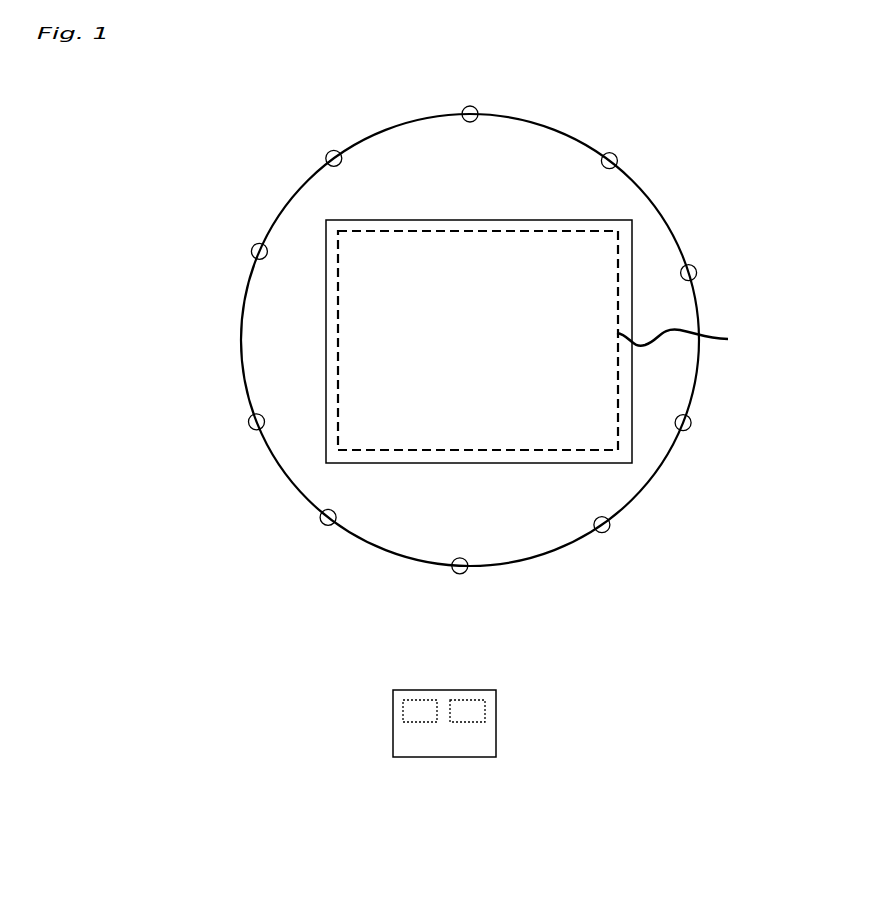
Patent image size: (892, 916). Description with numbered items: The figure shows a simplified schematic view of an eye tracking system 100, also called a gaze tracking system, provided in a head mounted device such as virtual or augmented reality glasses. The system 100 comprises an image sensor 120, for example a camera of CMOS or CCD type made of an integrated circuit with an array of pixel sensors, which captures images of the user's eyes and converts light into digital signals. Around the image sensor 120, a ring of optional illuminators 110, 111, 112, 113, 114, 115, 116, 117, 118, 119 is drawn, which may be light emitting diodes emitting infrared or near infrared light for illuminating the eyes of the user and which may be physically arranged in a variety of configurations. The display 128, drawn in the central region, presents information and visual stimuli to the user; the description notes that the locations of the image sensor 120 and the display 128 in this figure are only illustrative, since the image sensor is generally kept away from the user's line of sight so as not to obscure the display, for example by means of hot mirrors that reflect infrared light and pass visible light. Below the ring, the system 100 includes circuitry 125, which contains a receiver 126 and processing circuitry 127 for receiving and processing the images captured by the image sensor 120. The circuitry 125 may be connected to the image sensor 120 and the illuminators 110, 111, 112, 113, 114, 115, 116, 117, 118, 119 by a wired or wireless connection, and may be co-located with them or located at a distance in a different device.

The eye tracking system 100 is at (205, 572).
The illuminator 110 is at (258, 243).
The illuminator 111 is at (335, 150).
The illuminator 112 is at (470, 106).
The illuminator 113 is at (615, 153).
The illuminator 114 is at (692, 265).
The illuminator 115 is at (689, 430).
The illuminator 116 is at (605, 532).
The illuminator 117 is at (460, 573).
The illuminator 118 is at (330, 525).
The illuminator 119 is at (256, 430).
The image sensor 120 is at (485, 220).
The circuitry 125 is at (447, 738).
The receiver 126 is at (410, 700).
The processing circuitry 127 is at (475, 700).
The display 128 is at (688, 340).